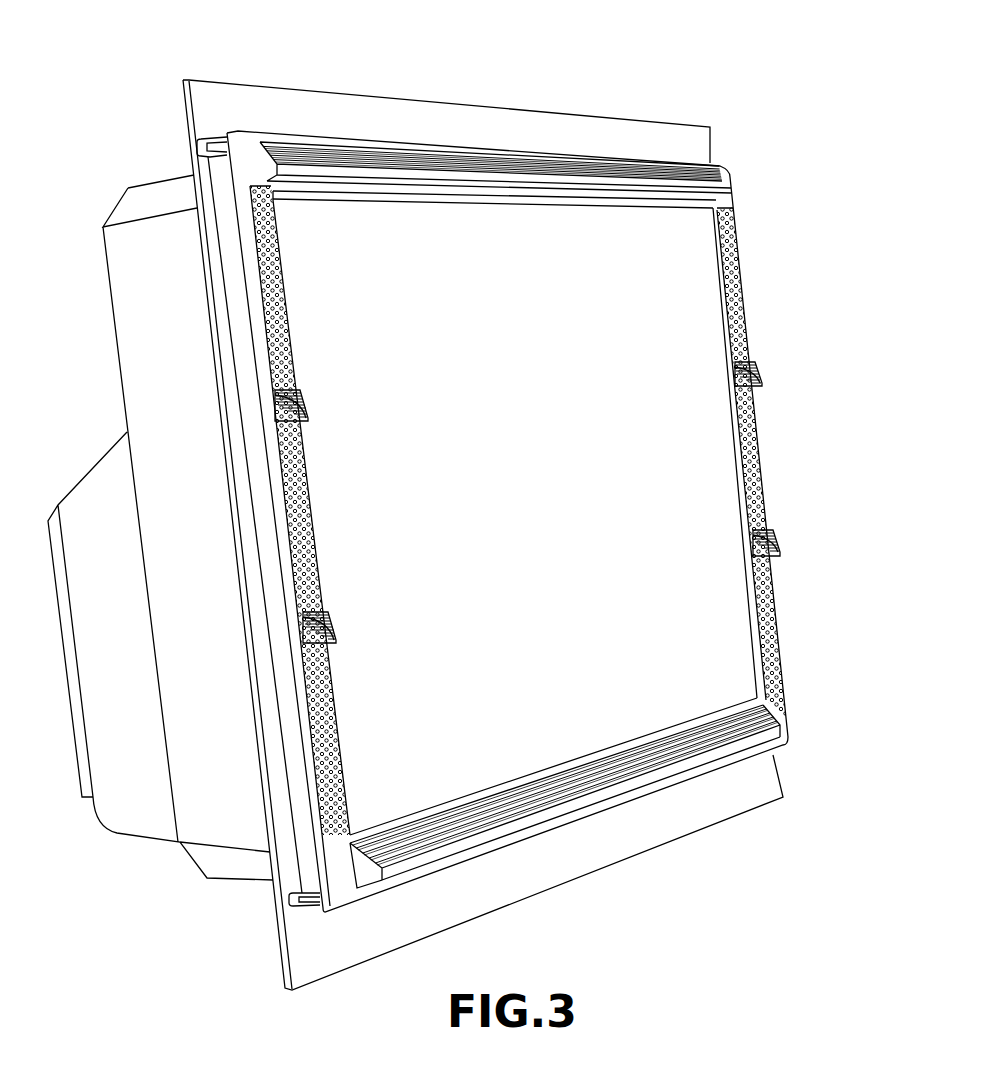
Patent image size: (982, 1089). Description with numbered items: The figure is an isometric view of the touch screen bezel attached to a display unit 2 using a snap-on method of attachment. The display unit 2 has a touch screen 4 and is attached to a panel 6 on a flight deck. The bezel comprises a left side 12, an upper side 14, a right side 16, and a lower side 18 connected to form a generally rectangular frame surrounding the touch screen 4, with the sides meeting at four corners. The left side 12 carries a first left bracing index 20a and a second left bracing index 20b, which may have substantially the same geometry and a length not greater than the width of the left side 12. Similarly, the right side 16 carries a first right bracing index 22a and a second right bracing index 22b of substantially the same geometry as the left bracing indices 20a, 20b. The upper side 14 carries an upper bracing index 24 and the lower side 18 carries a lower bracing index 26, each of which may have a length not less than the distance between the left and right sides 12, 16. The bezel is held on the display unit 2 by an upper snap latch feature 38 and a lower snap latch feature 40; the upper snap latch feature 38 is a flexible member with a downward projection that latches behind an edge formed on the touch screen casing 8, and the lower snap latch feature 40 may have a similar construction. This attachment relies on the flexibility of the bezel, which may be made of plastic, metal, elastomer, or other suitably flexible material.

The display unit 2 is at (150, 182).
The touch screen 4 is at (451, 496).
The panel 6 is at (567, 112).
The touch screen casing 8 is at (230, 247).
The left side 12 is at (257, 347).
The upper side 14 is at (640, 165).
The right side 16 is at (752, 315).
The lower side 18 is at (648, 793).
The first left bracing index 20a is at (305, 402).
The second left bracing index 20b is at (332, 632).
The first right bracing index 22a is at (757, 370).
The second right bracing index 22b is at (772, 540).
The upper bracing index 24 is at (460, 183).
The lower bracing index 26 is at (602, 768).
The upper snap latch feature 38 is at (210, 136).
The lower snap latch feature 40 is at (293, 898).